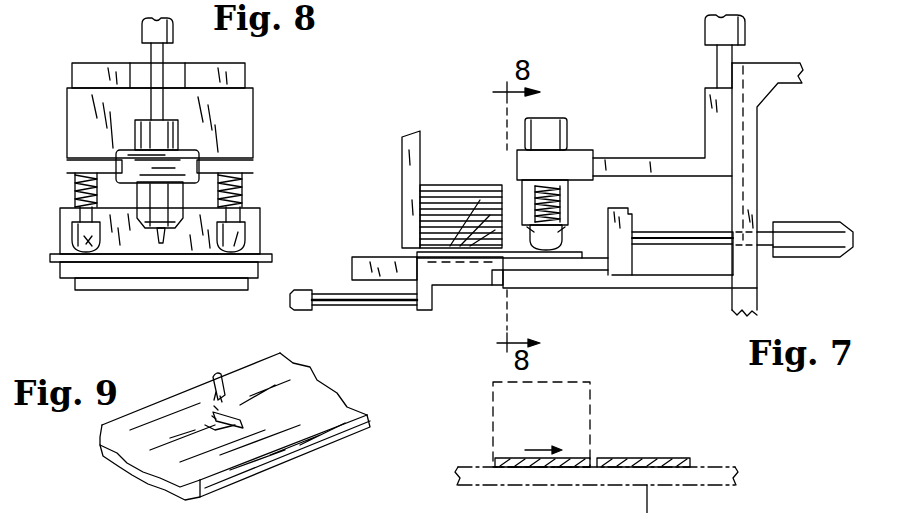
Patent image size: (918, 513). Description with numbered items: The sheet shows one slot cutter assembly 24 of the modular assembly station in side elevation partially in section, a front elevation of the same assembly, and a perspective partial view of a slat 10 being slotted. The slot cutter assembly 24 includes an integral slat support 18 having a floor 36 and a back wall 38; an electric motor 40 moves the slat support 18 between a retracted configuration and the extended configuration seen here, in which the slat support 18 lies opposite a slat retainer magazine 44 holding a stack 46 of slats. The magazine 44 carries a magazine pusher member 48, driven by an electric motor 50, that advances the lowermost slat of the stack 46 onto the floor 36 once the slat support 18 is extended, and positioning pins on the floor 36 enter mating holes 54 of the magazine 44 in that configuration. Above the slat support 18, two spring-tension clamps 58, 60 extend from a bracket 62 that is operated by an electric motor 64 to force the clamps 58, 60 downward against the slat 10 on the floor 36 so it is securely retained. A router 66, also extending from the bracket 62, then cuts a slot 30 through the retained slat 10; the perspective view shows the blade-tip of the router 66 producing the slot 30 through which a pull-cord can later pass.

In FIG. 8, the slat 10 is at (272, 257).
In FIG. 9, the slat 10 is at (345, 405).
In FIG. 7, the slat 10 is at (556, 262).
In FIG. 7, the slat support 18 is at (582, 280).
In FIG. 7, the slot cutter assembly 24 is at (783, 63).
In FIG. 9, the slot 30 is at (232, 432).
In FIG. 8, the floor 36 is at (82, 263).
In FIG. 7, the floor 36 is at (588, 255).
In FIG. 8, the back wall 38 is at (255, 215).
In FIG. 7, the back wall 38 is at (632, 215).
In FIG. 7, the electric motor 40 is at (815, 224).
In FIG. 7, the slat retainer magazine 44 is at (402, 192).
In FIG. 7, the stack of slats 46 is at (455, 190).
In FIG. 7, the magazine pusher member 48 is at (455, 278).
In FIG. 7, the electric motor 50 is at (303, 312).
In FIG. 7, the mating holes 54 is at (527, 5).
In FIG. 8, the spring-tension clamp 58 is at (88, 240).
In FIG. 8, the spring-tension clamp 60 is at (240, 240).
In FIG. 7, the bracket 62 is at (645, 160).
In FIG. 7, the electric motor 64 is at (705, 30).
In FIG. 9, the router 66 is at (213, 385).